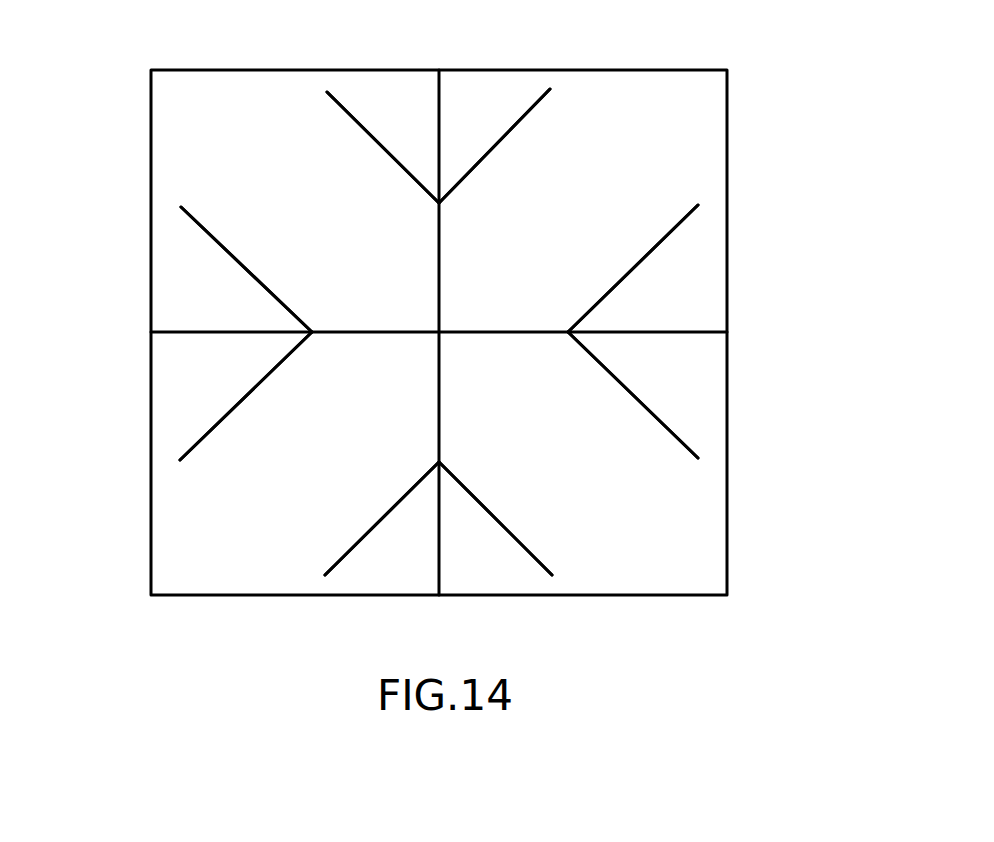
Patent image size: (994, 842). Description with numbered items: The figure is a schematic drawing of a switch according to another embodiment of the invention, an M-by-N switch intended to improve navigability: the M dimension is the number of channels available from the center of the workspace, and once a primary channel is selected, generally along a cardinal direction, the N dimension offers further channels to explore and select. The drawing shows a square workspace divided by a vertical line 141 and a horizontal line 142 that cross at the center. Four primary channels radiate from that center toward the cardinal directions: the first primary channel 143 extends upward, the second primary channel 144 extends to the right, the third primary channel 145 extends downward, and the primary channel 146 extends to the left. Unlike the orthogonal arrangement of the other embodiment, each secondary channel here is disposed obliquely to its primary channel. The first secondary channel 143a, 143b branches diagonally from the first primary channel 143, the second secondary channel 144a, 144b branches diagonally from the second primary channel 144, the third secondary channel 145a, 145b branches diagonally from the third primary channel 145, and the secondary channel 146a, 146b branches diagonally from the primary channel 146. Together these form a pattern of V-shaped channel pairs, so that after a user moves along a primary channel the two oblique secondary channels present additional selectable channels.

The vertical center line 141 is at (439, 252).
The horizontal center line 142 is at (508, 333).
The first primary channel 143 is at (439, 90).
The first secondary channel 143a is at (382, 150).
The first secondary channel 143b is at (503, 138).
The second primary channel 144 is at (673, 332).
The second secondary channel 144a is at (645, 260).
The second secondary channel 144b is at (647, 410).
The third primary channel 145 is at (439, 537).
The third secondary channel 145a is at (353, 547).
The third secondary channel 145b is at (520, 540).
The primary channel 146 is at (193, 332).
The secondary channel 146a is at (213, 240).
The secondary channel 146b is at (237, 400).